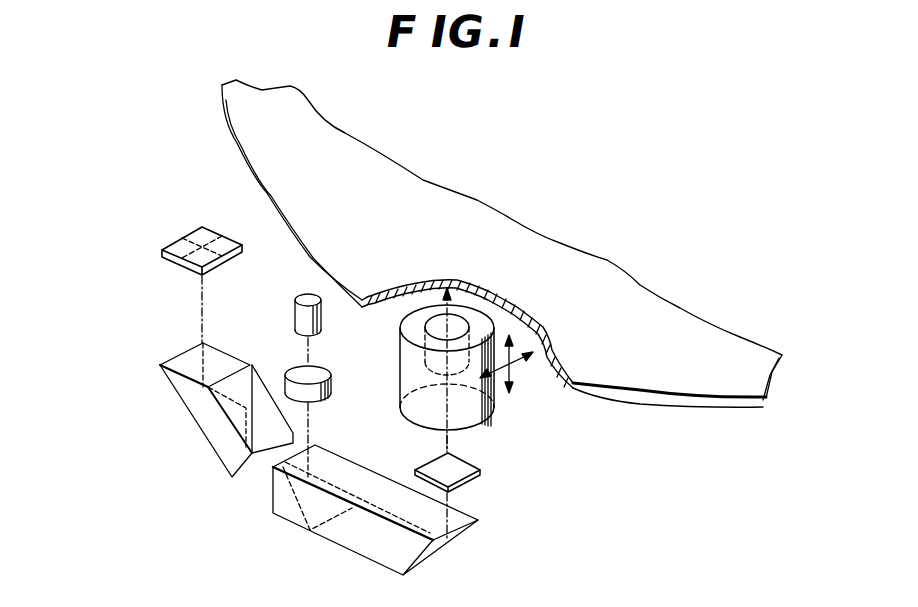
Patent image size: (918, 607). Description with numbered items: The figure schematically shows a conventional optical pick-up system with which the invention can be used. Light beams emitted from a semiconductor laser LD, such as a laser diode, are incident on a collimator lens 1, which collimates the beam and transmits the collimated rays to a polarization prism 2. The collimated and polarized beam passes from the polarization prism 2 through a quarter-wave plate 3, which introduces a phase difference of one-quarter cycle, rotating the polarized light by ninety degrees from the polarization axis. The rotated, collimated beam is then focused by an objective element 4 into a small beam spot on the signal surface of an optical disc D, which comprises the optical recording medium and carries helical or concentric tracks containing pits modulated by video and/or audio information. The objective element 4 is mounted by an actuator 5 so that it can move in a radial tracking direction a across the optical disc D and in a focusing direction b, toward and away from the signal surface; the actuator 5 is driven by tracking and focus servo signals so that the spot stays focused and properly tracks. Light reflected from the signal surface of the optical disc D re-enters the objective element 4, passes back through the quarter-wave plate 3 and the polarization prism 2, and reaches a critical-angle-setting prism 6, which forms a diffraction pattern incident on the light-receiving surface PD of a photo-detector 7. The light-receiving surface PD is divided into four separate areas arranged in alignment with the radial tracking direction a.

The collimator lens 1 is at (332, 387).
The polarization prism 2 is at (352, 535).
The quarter-wave plate 3 is at (467, 463).
The objective element 4 is at (460, 325).
The actuator 5 is at (407, 378).
The critical-angle-setting prism 6 is at (212, 423).
The photo-detector 7 is at (207, 232).
The light-receiving surface PD is at (180, 230).
The semiconductor laser LD is at (322, 322).
The optical disc D is at (690, 380).
The tracking direction a is at (518, 362).
The focusing direction b is at (512, 373).